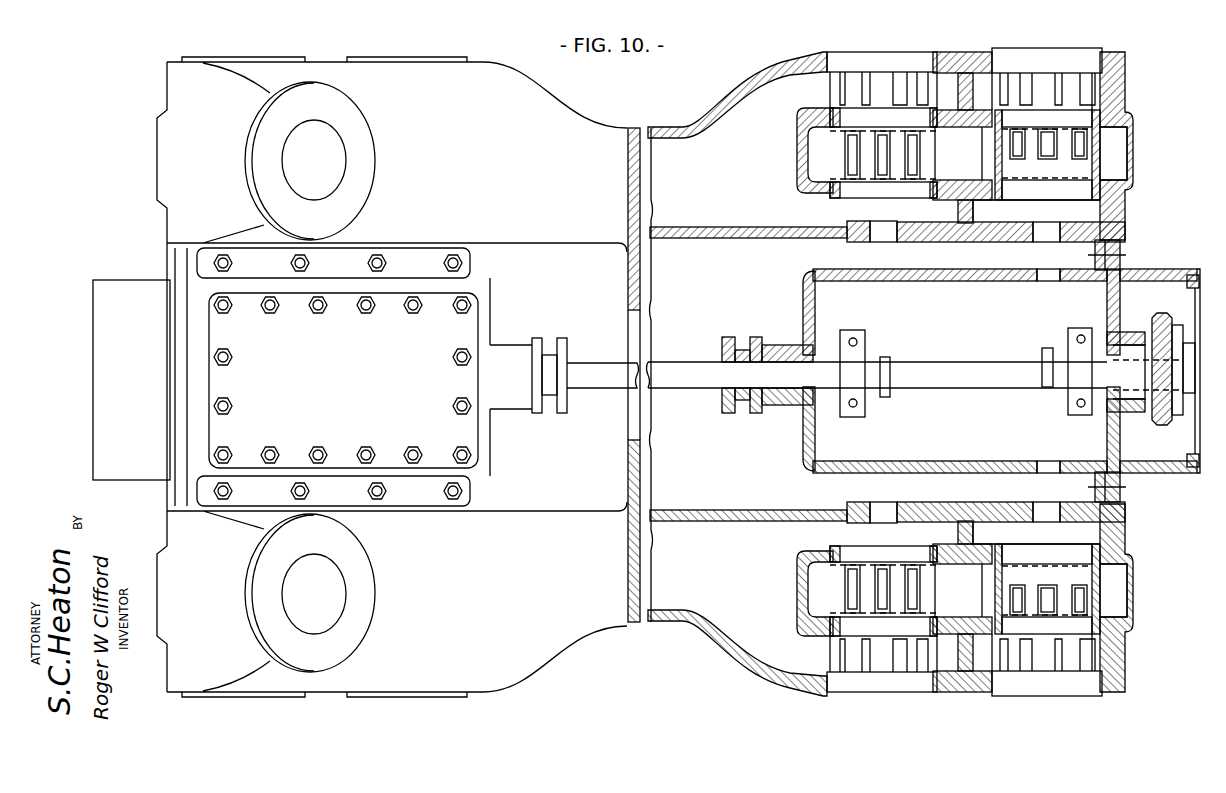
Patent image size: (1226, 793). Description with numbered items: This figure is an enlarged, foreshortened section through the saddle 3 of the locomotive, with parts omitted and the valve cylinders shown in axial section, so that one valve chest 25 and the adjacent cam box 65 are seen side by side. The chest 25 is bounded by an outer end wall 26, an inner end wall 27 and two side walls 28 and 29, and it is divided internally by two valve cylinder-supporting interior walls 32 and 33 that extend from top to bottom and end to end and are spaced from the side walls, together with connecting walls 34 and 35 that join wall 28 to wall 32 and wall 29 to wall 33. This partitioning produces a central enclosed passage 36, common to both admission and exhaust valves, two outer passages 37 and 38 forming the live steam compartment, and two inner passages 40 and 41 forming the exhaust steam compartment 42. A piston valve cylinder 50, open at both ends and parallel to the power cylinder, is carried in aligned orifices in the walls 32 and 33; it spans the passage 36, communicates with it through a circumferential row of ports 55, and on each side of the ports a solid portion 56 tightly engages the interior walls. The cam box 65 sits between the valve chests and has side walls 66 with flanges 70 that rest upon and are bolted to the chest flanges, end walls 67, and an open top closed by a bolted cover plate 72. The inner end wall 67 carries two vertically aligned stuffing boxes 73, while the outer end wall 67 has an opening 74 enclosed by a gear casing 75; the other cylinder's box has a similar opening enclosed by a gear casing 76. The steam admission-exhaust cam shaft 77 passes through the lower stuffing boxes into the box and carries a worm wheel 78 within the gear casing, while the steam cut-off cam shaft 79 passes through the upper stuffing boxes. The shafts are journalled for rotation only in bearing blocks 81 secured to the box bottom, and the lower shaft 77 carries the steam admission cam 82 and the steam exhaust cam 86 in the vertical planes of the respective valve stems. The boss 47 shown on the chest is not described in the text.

The saddle 3 is at (560, 642).
The valve chest 25 is at (1152, 597).
The outer end wall 26 is at (1125, 87).
The inner end wall 27 is at (880, 160).
The side wall 28 is at (970, 52).
The side wall 29 is at (990, 240).
The valve cylinder-supporting interior wall 32 is at (985, 130).
The valve cylinder-supporting interior wall 33 is at (985, 182).
The connecting wall 34 is at (940, 68).
The connecting wall 35 is at (962, 210).
The enclosed space or passage 36 is at (808, 166).
The outer space or passage 37 is at (1093, 75).
The outer space or passage 38 is at (1105, 212).
The inner space or passage 40 is at (781, 92).
The inner space or passage 41 is at (792, 222).
The exhaust steam compartment 42 is at (870, 710).
The boss 47 is at (348, 142).
The piston valve cylinder 50 is at (812, 190).
The ports 55 is at (855, 170).
The solid portion 56 is at (914, 117).
The cam box 65 is at (493, 438).
The side wall 66 is at (905, 283).
The end wall 67 is at (803, 300).
The flange 70 is at (430, 252).
The cover plate 72 is at (478, 326).
The stuffing box 73 is at (503, 352).
The opening 74 is at (1107, 345).
The gear casing 75 is at (1135, 270).
The gear casing 76 is at (120, 290).
The steam admission-exhaust cam shaft 77 is at (970, 372).
The worm wheel 78 is at (1165, 313).
The steam cut-off cam shaft 79 is at (593, 362).
The bearing block 81 is at (862, 345).
The steam admission cam 82 is at (1047, 390).
The steam exhaust cam 86 is at (885, 397).